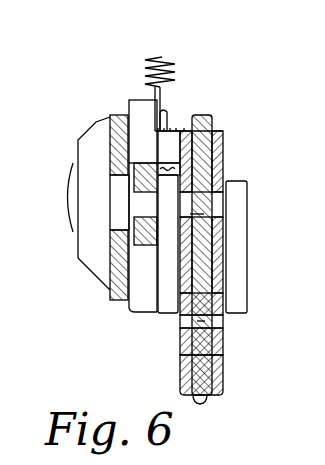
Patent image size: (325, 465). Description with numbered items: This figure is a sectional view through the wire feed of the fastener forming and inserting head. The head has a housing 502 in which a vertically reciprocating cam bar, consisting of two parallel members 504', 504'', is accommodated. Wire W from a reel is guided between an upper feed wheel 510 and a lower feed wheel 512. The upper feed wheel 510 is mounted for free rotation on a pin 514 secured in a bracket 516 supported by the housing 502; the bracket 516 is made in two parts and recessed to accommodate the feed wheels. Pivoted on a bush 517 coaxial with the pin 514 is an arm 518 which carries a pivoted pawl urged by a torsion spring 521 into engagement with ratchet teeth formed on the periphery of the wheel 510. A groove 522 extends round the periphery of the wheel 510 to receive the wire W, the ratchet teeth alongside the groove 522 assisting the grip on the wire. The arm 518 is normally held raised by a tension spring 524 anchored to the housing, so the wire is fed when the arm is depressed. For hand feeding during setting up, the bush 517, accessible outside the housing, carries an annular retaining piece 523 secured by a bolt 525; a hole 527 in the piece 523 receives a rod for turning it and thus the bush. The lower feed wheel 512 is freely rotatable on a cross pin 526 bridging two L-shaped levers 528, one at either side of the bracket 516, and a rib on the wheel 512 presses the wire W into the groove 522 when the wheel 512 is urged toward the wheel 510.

The housing 502 is at (131, 306).
The cam bar member 504' is at (259, 247).
The cam bar member 504'' is at (154, 260).
The upper feed wheel 510 is at (212, 124).
The lower feed wheel 512 is at (192, 338).
The pin 514 is at (215, 191).
The bracket 516 is at (203, 400).
The bush 517 is at (112, 228).
The arm 518 is at (133, 106).
The torsion spring 521 is at (180, 130).
The groove 522 is at (192, 128).
The annular retaining piece 523 is at (106, 278).
The tension spring 524 is at (163, 57).
The bolt 525 is at (67, 216).
The cross pin 526 is at (224, 323).
The hole 527 is at (97, 118).
The L-shaped levers 528 is at (224, 350).
The wire W is at (203, 290).